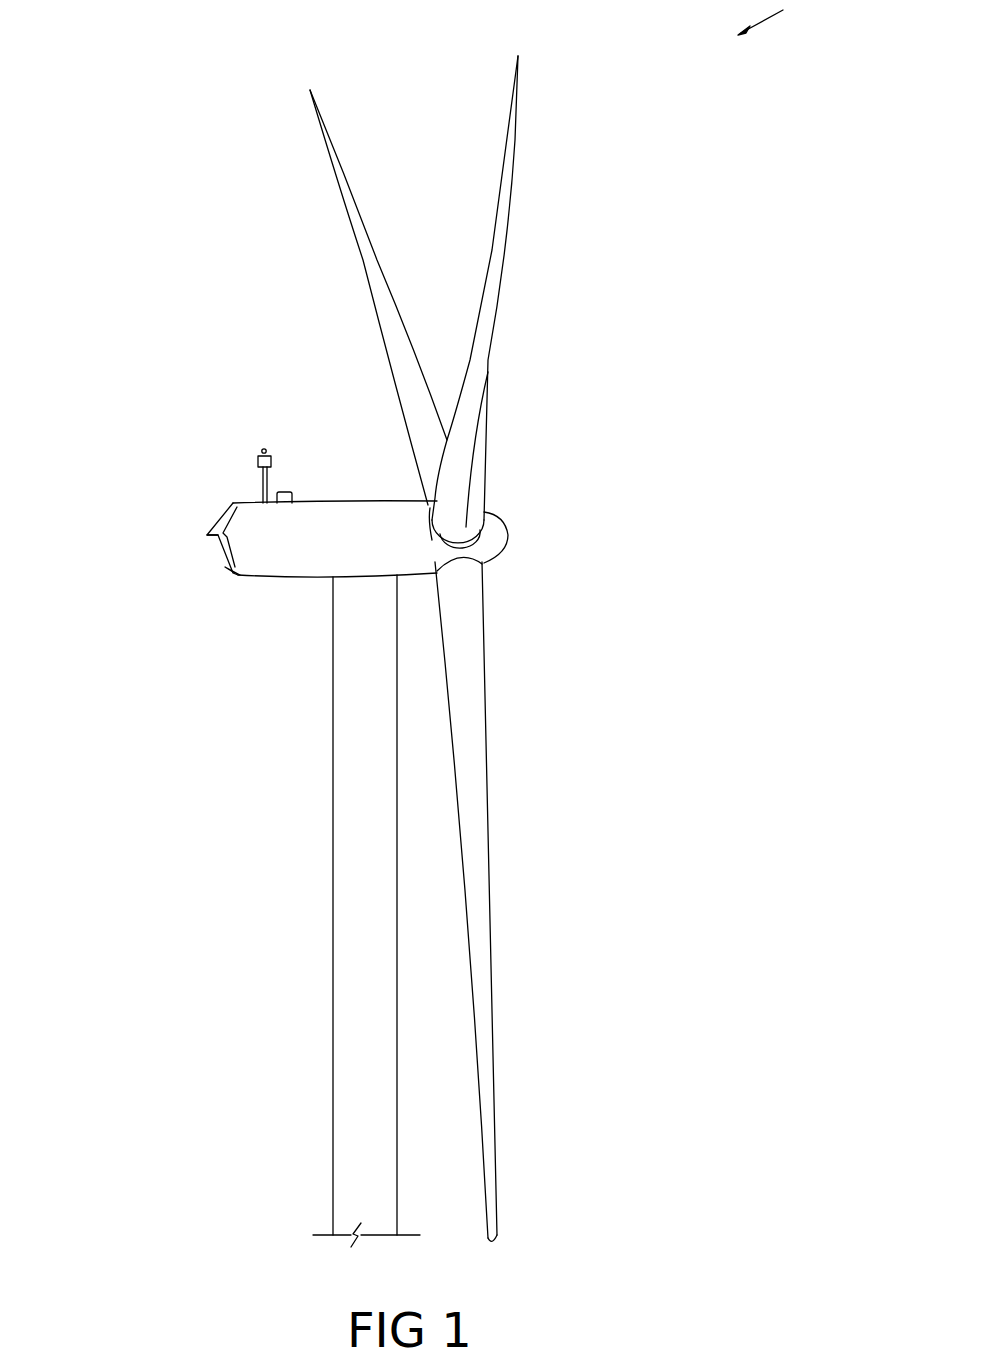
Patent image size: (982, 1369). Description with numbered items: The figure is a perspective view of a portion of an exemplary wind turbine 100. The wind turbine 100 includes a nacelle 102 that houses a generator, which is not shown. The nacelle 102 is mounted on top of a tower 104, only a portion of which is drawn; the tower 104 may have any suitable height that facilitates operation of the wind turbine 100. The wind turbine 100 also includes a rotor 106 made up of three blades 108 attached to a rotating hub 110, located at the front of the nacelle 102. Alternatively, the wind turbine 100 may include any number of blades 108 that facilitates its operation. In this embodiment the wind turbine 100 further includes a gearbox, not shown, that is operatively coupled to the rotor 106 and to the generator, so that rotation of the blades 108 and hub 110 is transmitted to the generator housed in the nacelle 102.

The wind turbine 100 is at (195, 138).
The nacelle 102 is at (262, 578).
The tower 104 is at (332, 860).
The rotor 106 is at (558, 273).
The blades 108 is at (348, 177).
The rotating hub 110 is at (503, 550).